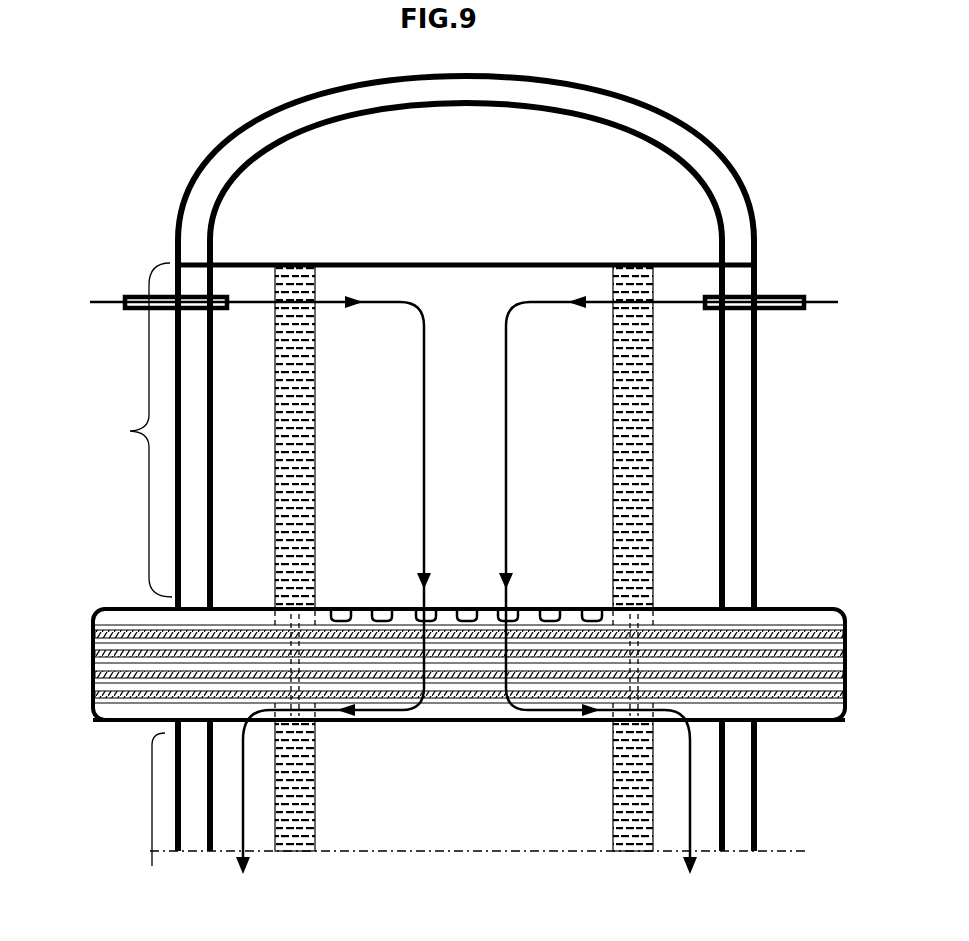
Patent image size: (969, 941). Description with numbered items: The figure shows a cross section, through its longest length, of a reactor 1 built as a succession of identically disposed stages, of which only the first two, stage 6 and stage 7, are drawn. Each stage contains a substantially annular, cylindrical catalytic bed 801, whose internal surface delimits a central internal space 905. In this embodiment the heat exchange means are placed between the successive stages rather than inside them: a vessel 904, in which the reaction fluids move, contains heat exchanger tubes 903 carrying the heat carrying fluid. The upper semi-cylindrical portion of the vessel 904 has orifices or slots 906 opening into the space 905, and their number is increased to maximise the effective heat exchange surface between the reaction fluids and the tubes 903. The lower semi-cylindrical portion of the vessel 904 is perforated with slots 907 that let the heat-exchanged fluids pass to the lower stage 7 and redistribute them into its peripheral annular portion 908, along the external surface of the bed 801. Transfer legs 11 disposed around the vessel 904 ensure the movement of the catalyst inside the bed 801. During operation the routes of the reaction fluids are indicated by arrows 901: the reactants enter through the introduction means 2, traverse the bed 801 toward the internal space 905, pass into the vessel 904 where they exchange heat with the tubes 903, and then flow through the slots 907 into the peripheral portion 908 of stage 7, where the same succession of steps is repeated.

The reactor 1 is at (627, 122).
The means for introducing reactants 2 is at (782, 297).
The first stage 6 is at (131, 431).
The lower stage 7 is at (150, 842).
The transfer legs 11 is at (290, 667).
The cylindrical catalytic bed 801 is at (300, 450).
The arrows 901 is at (836, 305).
The tubes 903 is at (160, 692).
The vessel 904 is at (135, 607).
The internal space 905 is at (484, 461).
The orifices or slots 906 is at (597, 607).
The slots 907 is at (704, 724).
The peripheral annular portion 908 is at (680, 797).